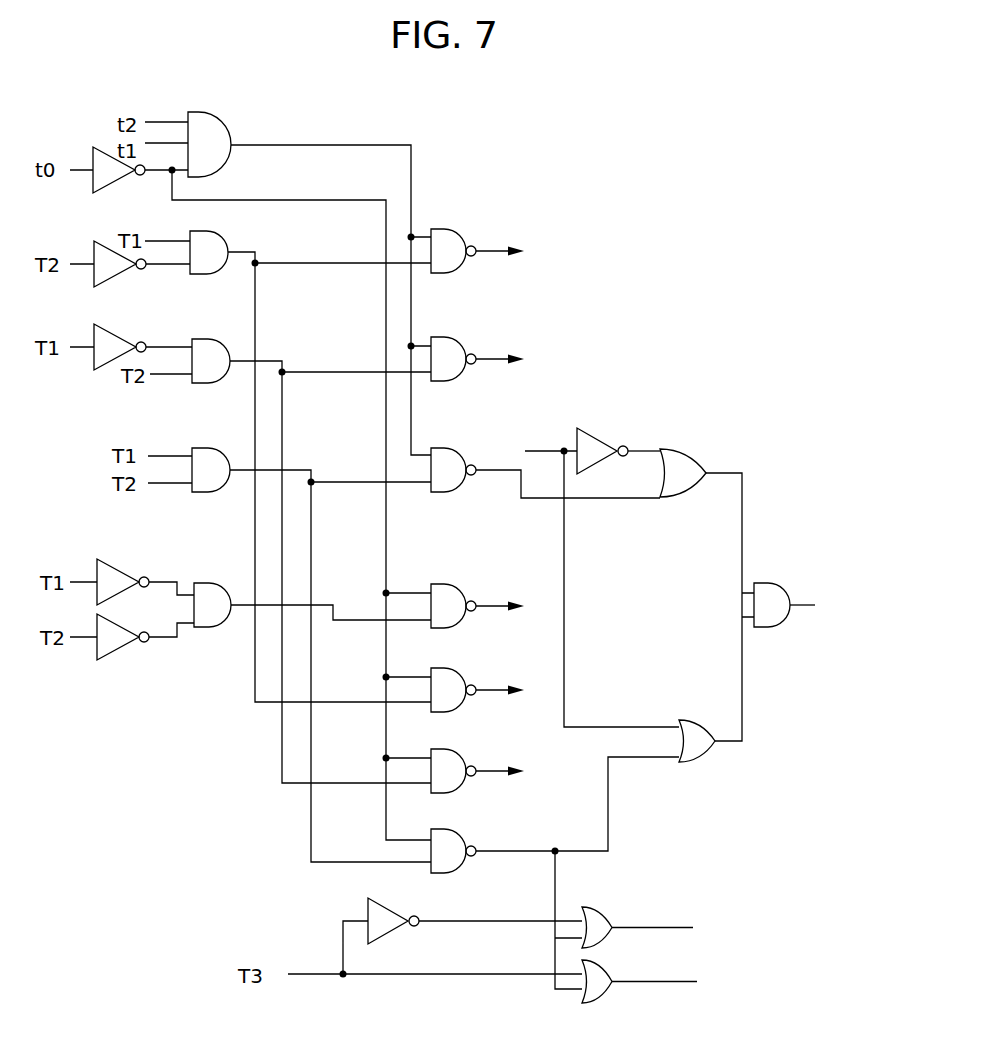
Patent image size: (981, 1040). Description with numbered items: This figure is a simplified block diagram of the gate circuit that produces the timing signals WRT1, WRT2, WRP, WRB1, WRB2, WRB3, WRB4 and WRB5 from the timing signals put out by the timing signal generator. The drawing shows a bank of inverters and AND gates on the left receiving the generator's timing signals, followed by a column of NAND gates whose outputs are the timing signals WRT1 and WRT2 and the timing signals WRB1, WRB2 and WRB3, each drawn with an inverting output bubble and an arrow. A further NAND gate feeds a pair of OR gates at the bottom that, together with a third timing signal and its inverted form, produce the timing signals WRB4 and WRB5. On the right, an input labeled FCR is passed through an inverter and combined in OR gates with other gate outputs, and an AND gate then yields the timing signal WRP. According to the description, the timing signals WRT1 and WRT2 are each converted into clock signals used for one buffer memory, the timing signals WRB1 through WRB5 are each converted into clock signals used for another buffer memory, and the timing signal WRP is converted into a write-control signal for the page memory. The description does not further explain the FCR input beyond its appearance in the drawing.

The timing signal WRT1 is at (523, 197).
The timing signal WRT2 is at (528, 308).
The timing signal WRB1 is at (530, 559).
The timing signal WRB2 is at (534, 645).
The timing signal WRB3 is at (536, 728).
The timing signal WRB4 is at (688, 892).
The timing signal WRB5 is at (688, 947).
The timing signal WRP is at (873, 583).
The FCR input inverter FCR is at (595, 574).